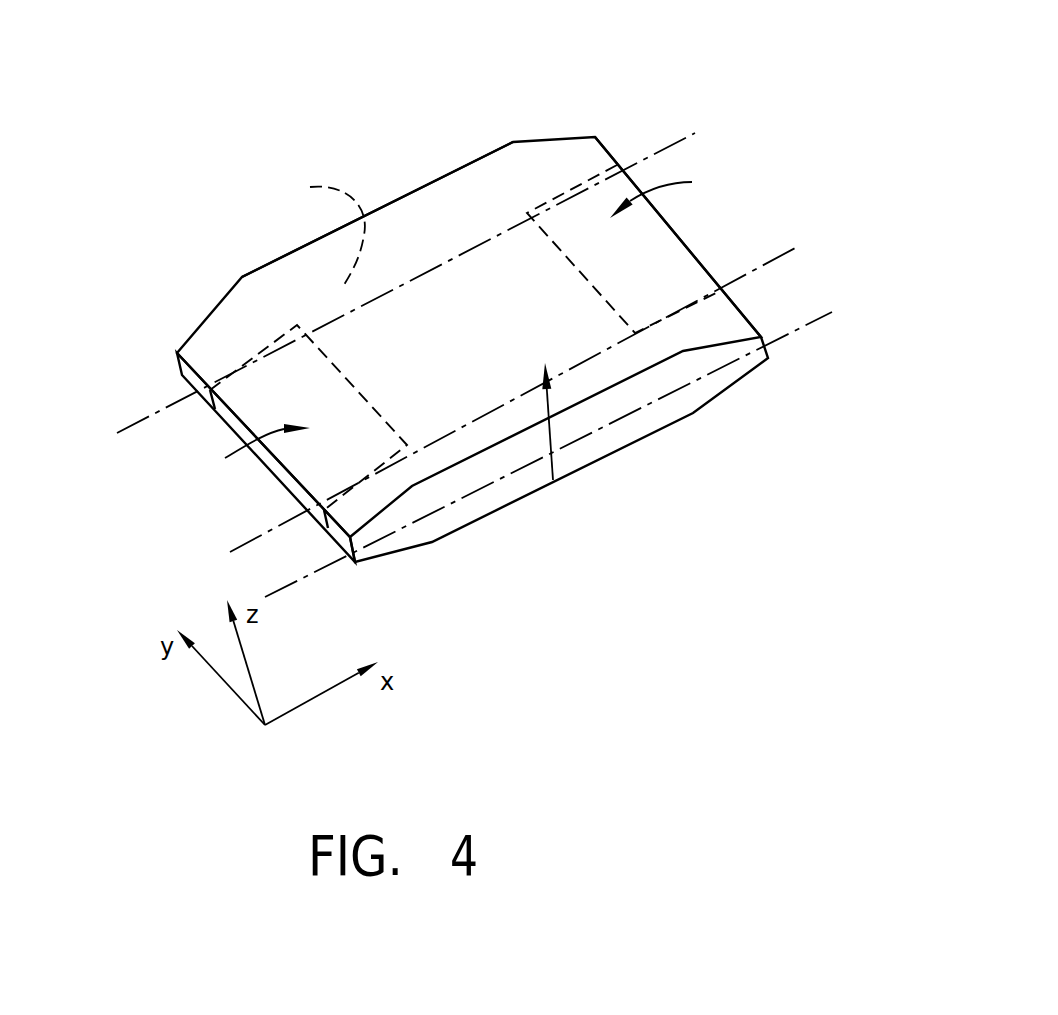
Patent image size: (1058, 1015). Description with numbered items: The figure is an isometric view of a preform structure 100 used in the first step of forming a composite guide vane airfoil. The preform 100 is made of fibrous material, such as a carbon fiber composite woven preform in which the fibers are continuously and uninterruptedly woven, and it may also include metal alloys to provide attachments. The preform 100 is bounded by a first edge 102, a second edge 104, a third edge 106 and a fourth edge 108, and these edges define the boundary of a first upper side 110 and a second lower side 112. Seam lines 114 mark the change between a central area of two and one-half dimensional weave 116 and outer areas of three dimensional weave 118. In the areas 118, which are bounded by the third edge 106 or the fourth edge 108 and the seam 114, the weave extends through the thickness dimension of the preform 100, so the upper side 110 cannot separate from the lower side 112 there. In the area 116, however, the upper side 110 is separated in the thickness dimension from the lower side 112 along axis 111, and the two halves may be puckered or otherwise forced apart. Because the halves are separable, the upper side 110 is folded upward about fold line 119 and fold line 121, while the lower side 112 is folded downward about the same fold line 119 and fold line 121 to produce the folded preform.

The preform structure 100 is at (155, 50).
The first edge 102 is at (652, 413).
The second edge 104 is at (445, 177).
The third edge 106 is at (182, 378).
The fourth edge 108 is at (608, 151).
The first upper side 110 is at (492, 324).
The axis 111 is at (793, 335).
The second lower side 112 is at (314, 231).
The seam lines 114 is at (364, 391).
The area of two and one-half dimensional weave 116 is at (553, 480).
The areas of three dimensional weave 118 is at (462, 323).
The fold line 119 is at (777, 260).
The fold line 121 is at (137, 432).